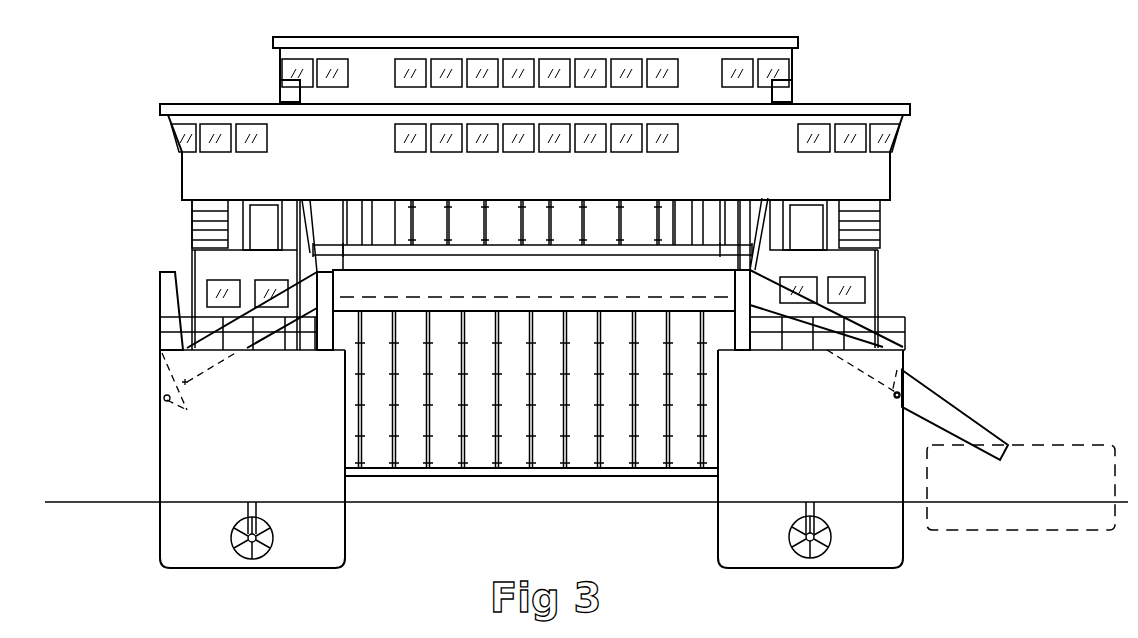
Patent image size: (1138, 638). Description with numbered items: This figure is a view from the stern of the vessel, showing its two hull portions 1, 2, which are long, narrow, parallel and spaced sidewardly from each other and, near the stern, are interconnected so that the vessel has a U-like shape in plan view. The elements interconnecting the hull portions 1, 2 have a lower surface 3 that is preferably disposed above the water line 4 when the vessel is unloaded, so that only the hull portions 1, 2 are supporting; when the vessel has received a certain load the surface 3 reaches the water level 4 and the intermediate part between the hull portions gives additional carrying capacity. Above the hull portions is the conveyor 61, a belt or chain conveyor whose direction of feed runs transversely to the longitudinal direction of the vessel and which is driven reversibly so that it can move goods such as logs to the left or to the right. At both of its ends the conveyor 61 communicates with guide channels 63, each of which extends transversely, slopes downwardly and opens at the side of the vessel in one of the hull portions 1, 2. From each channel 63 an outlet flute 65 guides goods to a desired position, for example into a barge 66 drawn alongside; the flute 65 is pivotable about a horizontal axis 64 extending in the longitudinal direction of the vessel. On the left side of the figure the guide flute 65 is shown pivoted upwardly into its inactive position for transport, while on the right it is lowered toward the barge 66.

The hull portion 1 is at (172, 458).
The hull portion 2 is at (885, 518).
The lower surface 3 is at (547, 473).
The water line 4 is at (433, 504).
The conveyor 61 is at (540, 296).
The guide channel 63 is at (822, 333).
The horizontal axis 64 is at (895, 402).
The outlet flute 65 is at (168, 295).
The barge 66 is at (1083, 458).